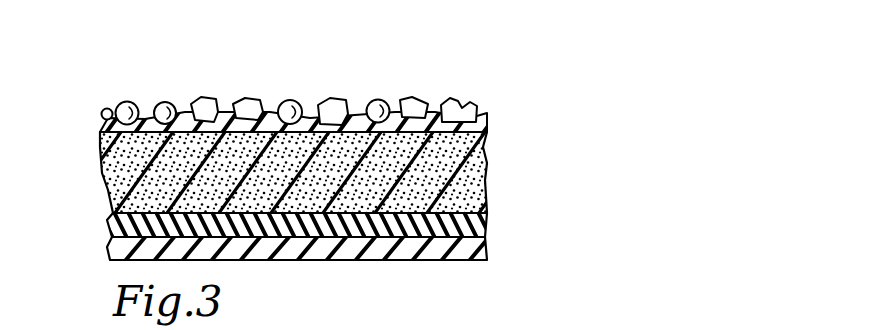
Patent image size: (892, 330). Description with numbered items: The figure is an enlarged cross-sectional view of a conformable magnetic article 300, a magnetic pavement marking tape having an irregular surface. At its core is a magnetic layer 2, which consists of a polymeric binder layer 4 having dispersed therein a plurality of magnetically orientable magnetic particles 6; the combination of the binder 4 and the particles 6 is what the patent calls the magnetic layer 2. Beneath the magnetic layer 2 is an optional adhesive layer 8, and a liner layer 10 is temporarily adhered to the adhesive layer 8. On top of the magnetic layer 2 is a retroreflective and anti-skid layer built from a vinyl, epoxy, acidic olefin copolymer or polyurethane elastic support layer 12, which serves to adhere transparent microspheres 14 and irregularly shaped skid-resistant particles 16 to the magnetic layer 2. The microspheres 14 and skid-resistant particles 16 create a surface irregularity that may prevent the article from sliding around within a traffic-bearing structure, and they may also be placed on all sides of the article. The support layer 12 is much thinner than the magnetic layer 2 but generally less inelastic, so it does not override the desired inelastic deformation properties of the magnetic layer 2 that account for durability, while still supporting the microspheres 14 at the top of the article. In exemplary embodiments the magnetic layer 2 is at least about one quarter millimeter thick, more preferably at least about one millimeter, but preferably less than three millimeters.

The conformable magnetic article 300 is at (512, 53).
The magnetic layer 2 is at (98, 153).
The polymeric binder layer 4 is at (473, 178).
The magnetic particles 6 is at (460, 158).
The adhesive layer 8 is at (483, 227).
The liner layer 10 is at (477, 245).
The elastic support layer 12 is at (437, 104).
The transparent microspheres 14 is at (156, 99).
The skid-resistant particles 16 is at (243, 97).